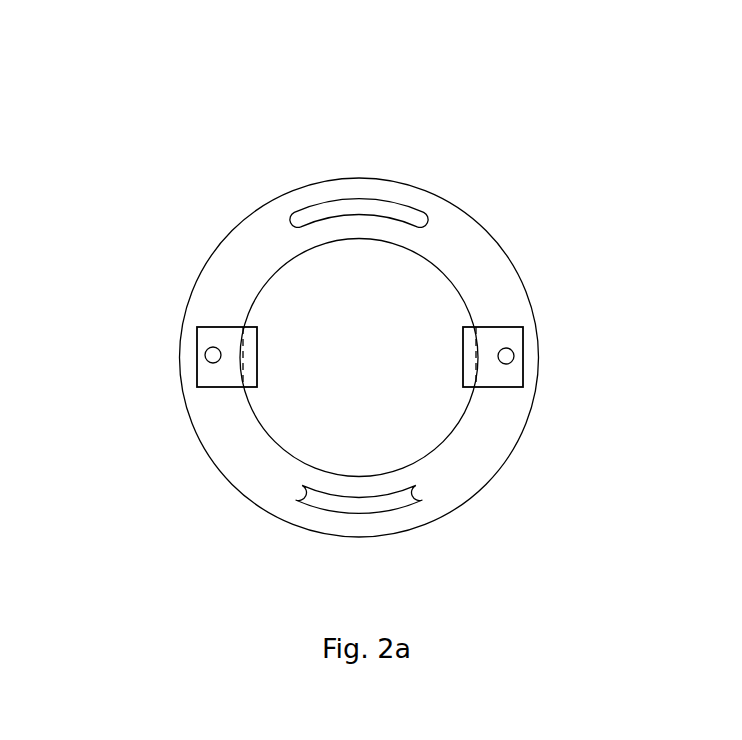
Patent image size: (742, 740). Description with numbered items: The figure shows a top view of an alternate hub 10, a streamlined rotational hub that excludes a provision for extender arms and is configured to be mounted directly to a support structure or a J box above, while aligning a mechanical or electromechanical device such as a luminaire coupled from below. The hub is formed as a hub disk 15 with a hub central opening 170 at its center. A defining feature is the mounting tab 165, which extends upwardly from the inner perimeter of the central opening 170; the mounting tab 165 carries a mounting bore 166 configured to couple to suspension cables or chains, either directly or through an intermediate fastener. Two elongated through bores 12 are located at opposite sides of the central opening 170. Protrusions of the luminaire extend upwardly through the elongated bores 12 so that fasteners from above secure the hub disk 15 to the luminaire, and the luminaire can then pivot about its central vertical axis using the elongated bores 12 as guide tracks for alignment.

The alternate hub 10 is at (222, 70).
The elongated through bores 12 is at (359, 207).
The hub disk 15 is at (462, 490).
The mounting tab 165 is at (510, 376).
The mounting bore 166 is at (212, 346).
The hub central opening 170 is at (433, 354).